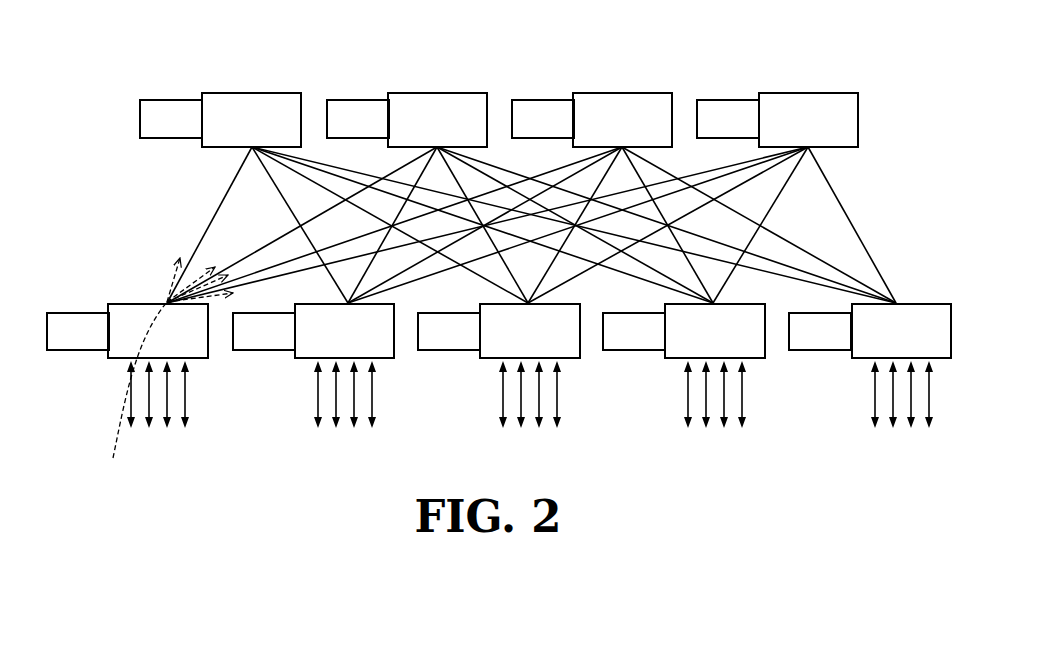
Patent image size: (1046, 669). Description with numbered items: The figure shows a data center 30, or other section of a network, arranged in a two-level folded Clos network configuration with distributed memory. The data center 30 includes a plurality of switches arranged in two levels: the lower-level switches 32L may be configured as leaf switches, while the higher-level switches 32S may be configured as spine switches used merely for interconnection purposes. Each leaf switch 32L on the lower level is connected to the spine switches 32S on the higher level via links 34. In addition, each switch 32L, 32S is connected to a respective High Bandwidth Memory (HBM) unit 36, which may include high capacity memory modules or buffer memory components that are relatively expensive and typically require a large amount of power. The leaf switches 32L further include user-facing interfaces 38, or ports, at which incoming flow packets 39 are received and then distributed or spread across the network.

The data center 30 is at (283, 520).
The spine switch 32S is at (613, 92).
The leaf switch 32L is at (138, 303).
The link 34 is at (866, 210).
The High Bandwidth Memory unit 36 is at (350, 100).
The user-facing interface 38 is at (490, 395).
The incoming flow packet 39 is at (122, 440).